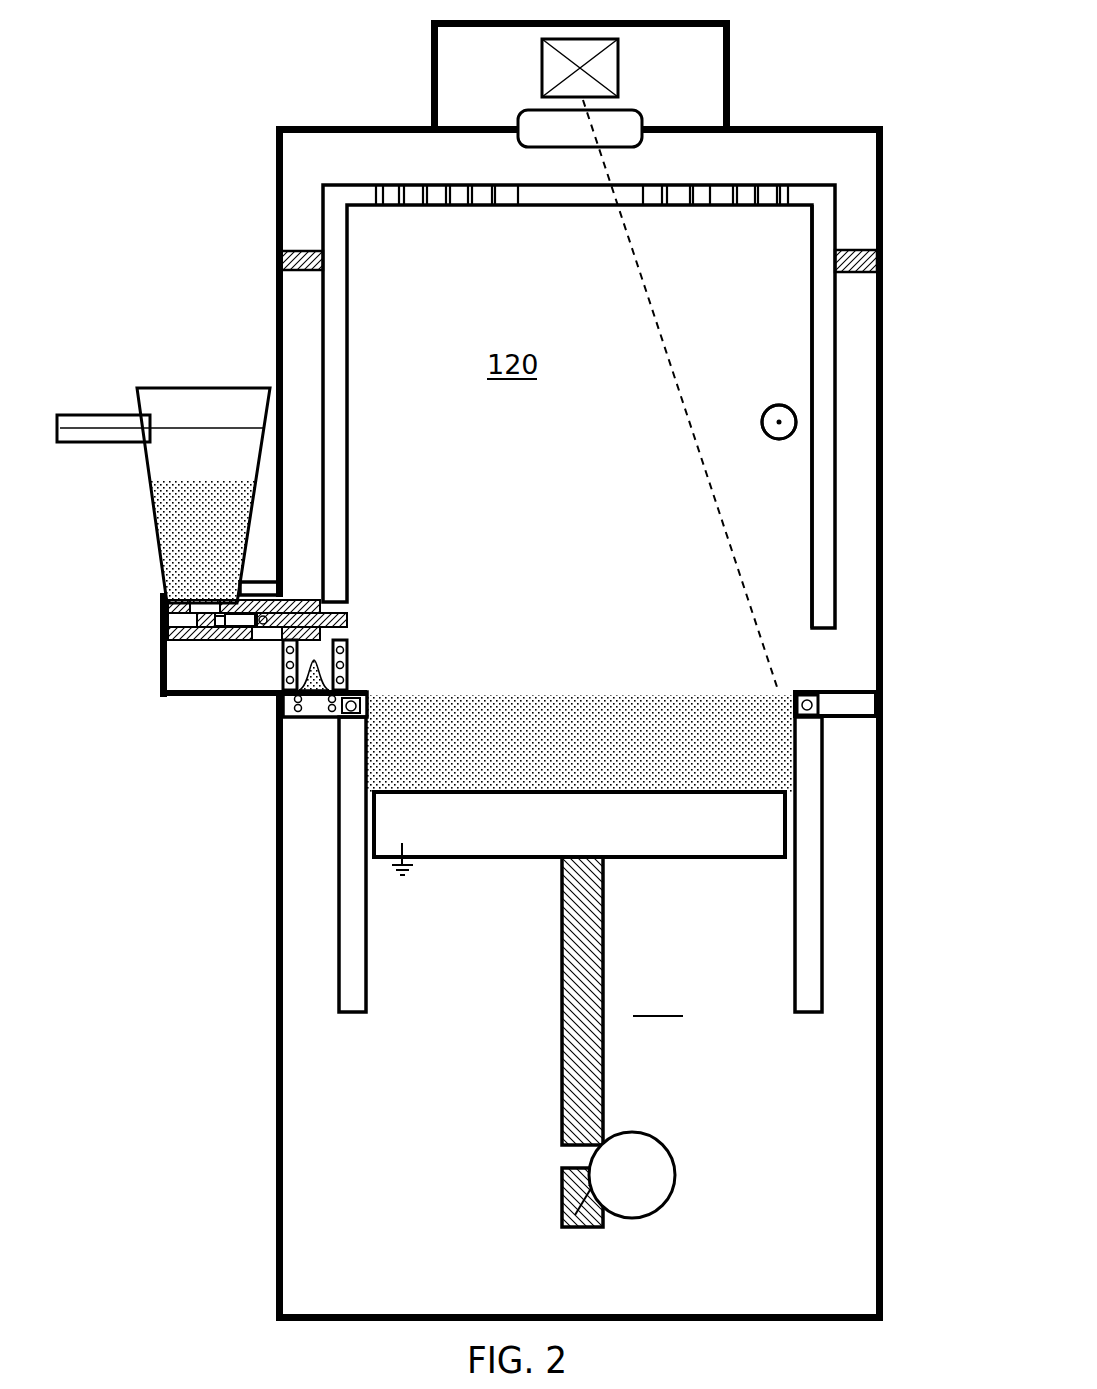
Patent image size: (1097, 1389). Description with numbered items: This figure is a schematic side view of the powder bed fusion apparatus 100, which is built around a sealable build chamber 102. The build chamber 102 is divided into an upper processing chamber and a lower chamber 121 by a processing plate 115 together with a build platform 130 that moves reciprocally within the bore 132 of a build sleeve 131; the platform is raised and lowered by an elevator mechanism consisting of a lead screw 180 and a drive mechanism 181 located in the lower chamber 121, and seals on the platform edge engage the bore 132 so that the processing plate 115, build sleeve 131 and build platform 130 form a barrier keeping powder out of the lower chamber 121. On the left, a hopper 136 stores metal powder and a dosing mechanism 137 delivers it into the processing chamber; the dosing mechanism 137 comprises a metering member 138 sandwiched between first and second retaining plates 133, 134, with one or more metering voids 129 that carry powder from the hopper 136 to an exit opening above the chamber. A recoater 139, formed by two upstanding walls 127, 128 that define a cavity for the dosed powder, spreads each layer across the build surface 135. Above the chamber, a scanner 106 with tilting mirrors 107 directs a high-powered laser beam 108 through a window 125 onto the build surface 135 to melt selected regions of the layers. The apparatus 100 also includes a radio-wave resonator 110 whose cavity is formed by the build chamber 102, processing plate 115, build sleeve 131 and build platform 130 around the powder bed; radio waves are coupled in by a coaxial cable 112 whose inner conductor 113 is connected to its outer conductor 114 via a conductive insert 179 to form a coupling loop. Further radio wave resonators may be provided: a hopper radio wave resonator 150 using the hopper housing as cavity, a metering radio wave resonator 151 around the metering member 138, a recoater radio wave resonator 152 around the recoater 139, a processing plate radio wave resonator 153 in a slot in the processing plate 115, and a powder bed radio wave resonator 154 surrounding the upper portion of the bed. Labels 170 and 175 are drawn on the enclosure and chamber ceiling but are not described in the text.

The powder bed fusion apparatus 100 is at (877, 100).
The build chamber 102 is at (885, 178).
The scanner 106 is at (740, 45).
The tilting mirrors 107 is at (563, 66).
The laser beam 108 is at (688, 417).
The radio-wave resonator 110 is at (371, 348).
The coaxial cable 112 is at (805, 420).
The inner conductor 113 is at (772, 392).
The outer conductor 114 is at (779, 445).
The processing plate 115 is at (850, 690).
The lower chamber 121 is at (623, 1001).
The window 125 is at (548, 130).
The upstanding wall 127 is at (355, 680).
The upstanding wall 128 is at (270, 676).
The metering void 129 is at (242, 622).
The build platform 130 is at (747, 828).
The build sleeve 131 is at (356, 844).
The bore 132 is at (795, 750).
The first retaining plate 133 is at (162, 607).
The second retaining plate 134 is at (157, 635).
The build surface 135 is at (660, 688).
The hopper 136 is at (158, 545).
The dosing mechanism 137 is at (308, 597).
The metering member 138 is at (352, 612).
The recoater 139 is at (373, 633).
The hopper radio wave resonator 150 is at (98, 405).
The metering radio wave resonator 151 is at (207, 624).
The recoater radio wave resonator 152 is at (355, 655).
The processing plate radio wave resonator 153 is at (312, 704).
The powder bed radio wave resonator 154 is at (848, 706).
The gap between enclosure and chamber 170 is at (305, 157).
The gas inlet slits 175 is at (403, 208).
The conductive insert 179 is at (812, 292).
The lead screw 180 is at (555, 1210).
The drive mechanism 181 is at (650, 1172).